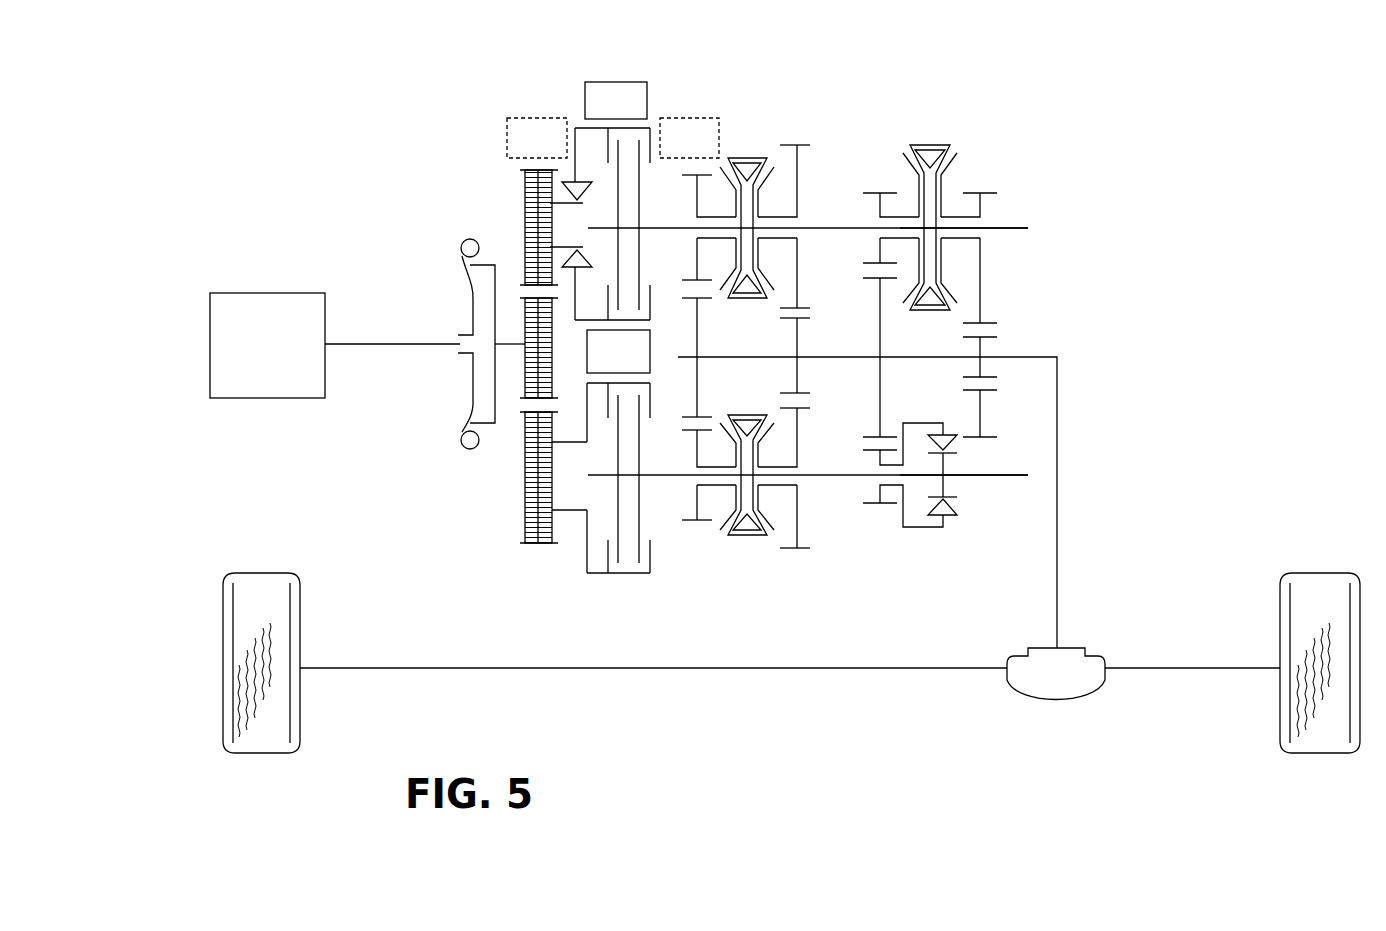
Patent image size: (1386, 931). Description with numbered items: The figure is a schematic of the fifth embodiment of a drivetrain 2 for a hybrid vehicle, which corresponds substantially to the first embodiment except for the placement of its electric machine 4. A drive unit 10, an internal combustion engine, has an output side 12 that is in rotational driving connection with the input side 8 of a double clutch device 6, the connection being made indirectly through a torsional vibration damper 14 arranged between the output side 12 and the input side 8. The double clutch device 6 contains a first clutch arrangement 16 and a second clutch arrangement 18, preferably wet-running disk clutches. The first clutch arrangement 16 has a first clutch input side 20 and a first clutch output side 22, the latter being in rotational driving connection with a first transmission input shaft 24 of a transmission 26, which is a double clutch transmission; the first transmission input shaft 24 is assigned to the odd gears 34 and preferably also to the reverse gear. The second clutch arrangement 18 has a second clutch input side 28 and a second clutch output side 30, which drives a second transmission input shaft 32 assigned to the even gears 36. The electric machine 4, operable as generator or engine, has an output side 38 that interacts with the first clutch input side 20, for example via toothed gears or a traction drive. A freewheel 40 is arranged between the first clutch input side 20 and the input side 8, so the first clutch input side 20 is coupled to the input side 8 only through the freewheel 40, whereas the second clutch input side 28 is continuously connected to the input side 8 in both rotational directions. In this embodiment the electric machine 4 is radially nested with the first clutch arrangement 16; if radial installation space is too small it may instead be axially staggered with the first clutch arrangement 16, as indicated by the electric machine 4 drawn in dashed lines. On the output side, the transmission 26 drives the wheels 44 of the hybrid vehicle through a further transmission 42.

The drivetrain 2 is at (186, 205).
The electric machine 4 is at (507, 130).
The double clutch device 6 is at (786, 368).
The input side 8 is at (510, 345).
The drive unit 10 is at (267, 345).
The output side 12 is at (350, 343).
The torsional vibration damper 14 is at (458, 447).
The first clutch arrangement 16 is at (571, 164).
The second clutch arrangement 18 is at (576, 526).
The first clutch input side 20 is at (574, 127).
The first clutch output side 22 is at (670, 227).
The first transmission input shaft 24 is at (707, 227).
The transmission 26 is at (832, 176).
The second clutch input side 28 is at (587, 566).
The second clutch output side 30 is at (645, 483).
The second transmission input shaft 32 is at (655, 483).
The odd gears 34 is at (1025, 214).
The even gears 36 is at (1037, 495).
The output side 38 is at (608, 127).
The freewheel 40 is at (555, 190).
The further transmission 42 is at (1016, 695).
The wheels 44 is at (1279, 728).